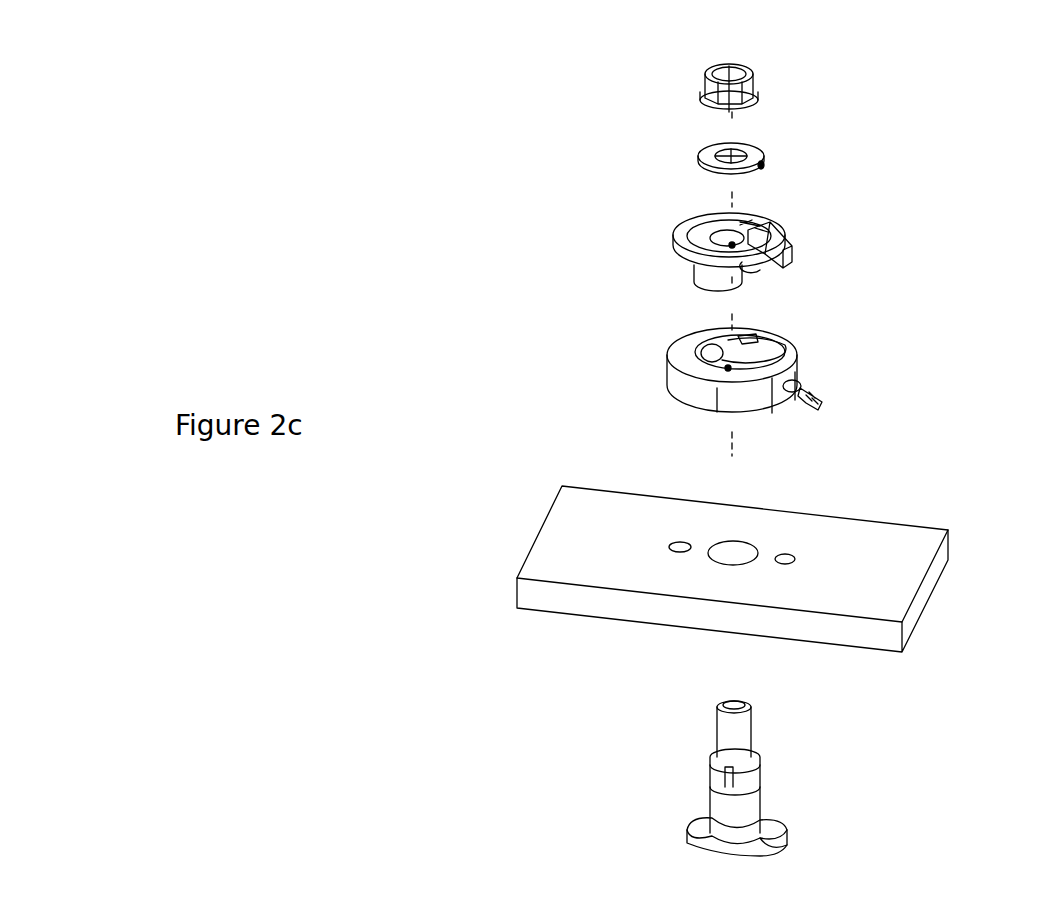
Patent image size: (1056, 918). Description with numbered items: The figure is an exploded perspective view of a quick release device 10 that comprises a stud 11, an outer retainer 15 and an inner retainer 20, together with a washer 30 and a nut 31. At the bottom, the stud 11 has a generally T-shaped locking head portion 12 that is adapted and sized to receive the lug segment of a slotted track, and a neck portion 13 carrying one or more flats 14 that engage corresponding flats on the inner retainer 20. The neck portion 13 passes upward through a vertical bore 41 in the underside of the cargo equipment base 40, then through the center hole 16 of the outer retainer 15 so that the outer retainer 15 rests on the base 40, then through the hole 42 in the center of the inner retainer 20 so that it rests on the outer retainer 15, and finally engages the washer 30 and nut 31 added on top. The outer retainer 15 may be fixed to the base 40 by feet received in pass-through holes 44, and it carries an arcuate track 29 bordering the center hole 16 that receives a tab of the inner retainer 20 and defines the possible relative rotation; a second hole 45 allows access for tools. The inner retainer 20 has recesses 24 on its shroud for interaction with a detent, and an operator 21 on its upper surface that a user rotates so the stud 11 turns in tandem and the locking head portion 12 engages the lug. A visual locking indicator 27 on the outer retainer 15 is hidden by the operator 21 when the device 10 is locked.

The quick release device 10 is at (370, 280).
The nut 31 is at (737, 88).
The washer 30 is at (757, 156).
The hole 42 is at (732, 245).
The inner retainer 20 is at (727, 229).
The operator 21 is at (775, 250).
The recesses 24 is at (757, 278).
The second hole 45 is at (718, 353).
The arcuate track 29 is at (742, 334).
The outer retainer 15 is at (752, 369).
The center hole 16 is at (728, 368).
The visual locking indicator 27 is at (773, 387).
The vertical bore 41 is at (731, 552).
The cargo equipment base 40 is at (775, 572).
The pass-through holes 44 is at (673, 552).
The neck portion 13 is at (728, 743).
The flats 14 is at (740, 773).
The stud 11 is at (738, 805).
The locking head portion 12 is at (772, 828).